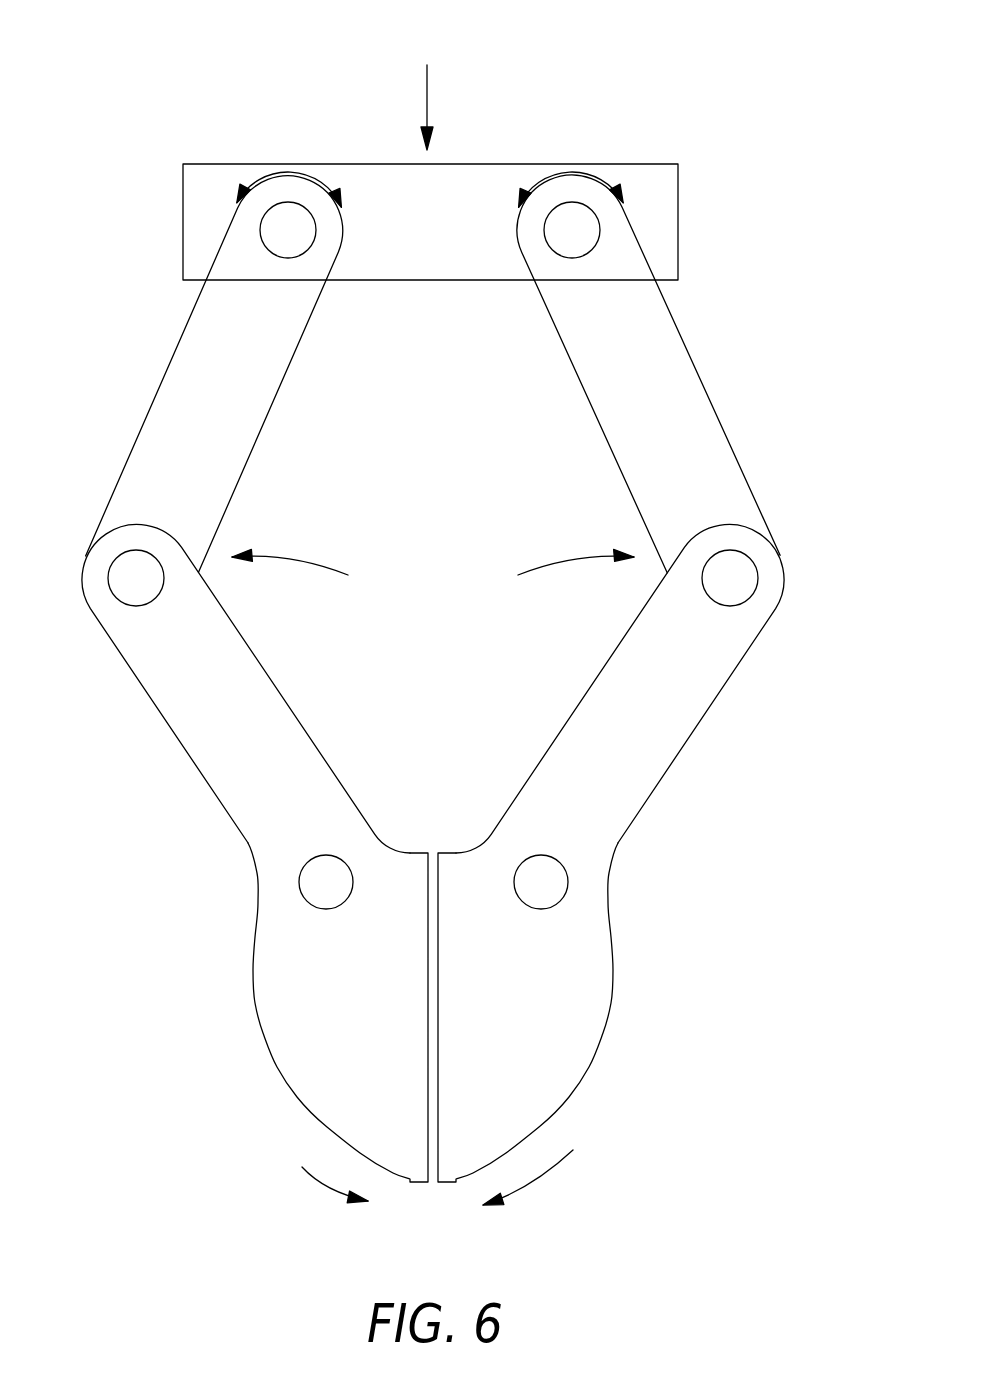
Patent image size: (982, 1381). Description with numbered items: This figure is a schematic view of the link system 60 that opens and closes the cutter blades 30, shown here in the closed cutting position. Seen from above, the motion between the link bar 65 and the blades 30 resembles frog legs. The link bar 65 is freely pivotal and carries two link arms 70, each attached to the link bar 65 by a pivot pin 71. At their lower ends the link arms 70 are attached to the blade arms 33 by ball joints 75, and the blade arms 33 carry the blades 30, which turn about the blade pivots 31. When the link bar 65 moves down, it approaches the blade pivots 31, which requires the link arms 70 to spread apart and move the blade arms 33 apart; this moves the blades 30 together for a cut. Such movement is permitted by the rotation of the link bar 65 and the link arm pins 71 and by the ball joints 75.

The link system 60 is at (157, 78).
The link bar 65 is at (492, 177).
The link arms 70 is at (190, 370).
The pivot pins 71 is at (287, 220).
The ball joints 75 is at (127, 570).
The blade arms 33 is at (193, 752).
The blade pivots 31 is at (315, 882).
The blades 30 is at (300, 1052).